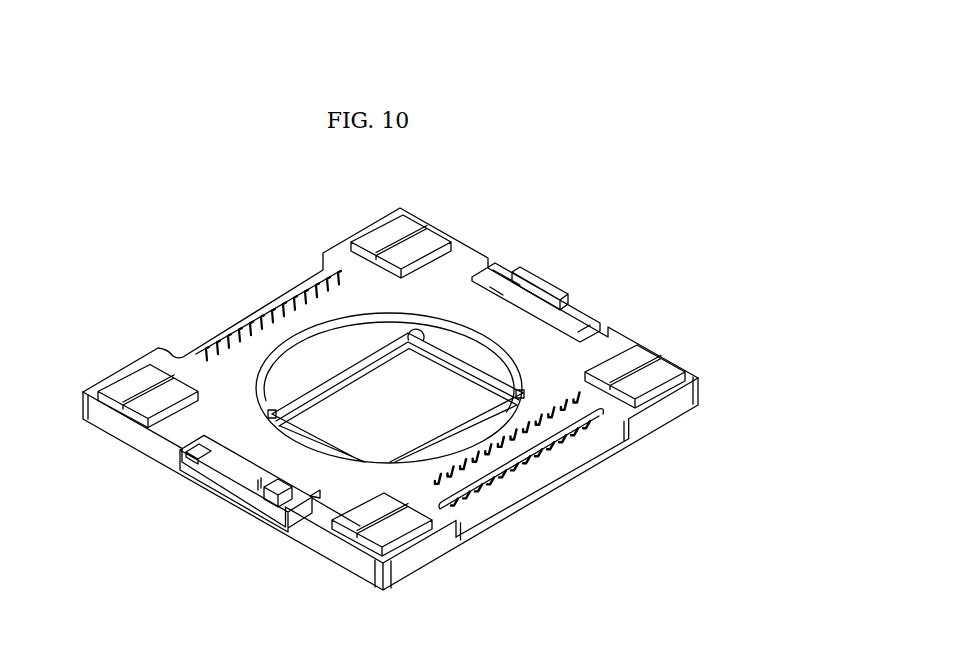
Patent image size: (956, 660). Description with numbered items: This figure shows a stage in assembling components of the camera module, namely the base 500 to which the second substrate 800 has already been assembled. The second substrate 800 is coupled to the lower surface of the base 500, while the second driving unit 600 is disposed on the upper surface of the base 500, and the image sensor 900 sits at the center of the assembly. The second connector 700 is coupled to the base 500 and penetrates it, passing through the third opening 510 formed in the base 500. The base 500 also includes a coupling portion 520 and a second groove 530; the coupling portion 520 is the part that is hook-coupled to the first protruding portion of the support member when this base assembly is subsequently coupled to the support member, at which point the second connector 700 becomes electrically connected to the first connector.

The base 500 is at (702, 382).
The third opening 510 is at (340, 355).
The coupling portion 520 is at (227, 477).
The second groove 530 is at (282, 494).
The second driving unit 600 is at (637, 355).
The second connector 700 is at (532, 437).
The second substrate 800 is at (700, 407).
The image sensor 900 is at (402, 393).